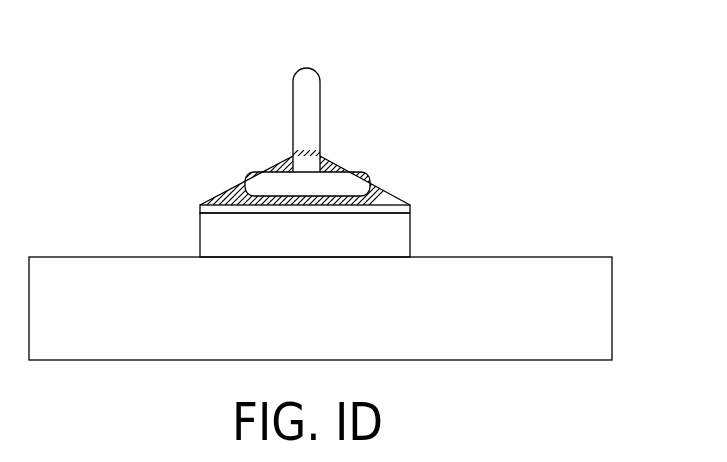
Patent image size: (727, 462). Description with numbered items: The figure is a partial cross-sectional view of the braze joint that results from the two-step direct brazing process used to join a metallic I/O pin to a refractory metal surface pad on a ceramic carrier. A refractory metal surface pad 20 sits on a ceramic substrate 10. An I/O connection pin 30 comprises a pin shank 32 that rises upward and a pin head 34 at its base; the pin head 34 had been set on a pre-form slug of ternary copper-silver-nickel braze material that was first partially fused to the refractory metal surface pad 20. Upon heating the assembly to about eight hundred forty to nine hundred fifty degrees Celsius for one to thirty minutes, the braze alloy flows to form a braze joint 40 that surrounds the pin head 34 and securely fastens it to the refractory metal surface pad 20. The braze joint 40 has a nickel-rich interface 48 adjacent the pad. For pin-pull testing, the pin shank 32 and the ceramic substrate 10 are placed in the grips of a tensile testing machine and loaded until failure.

The ceramic substrate 10 is at (588, 304).
The refractory metal surface pad 20 is at (395, 241).
The I/O connection pin 30 is at (369, 87).
The pin shank 32 is at (310, 104).
The pin head 34 is at (265, 178).
The braze joint 40 is at (392, 184).
The nickel-rich interface 48 is at (200, 208).